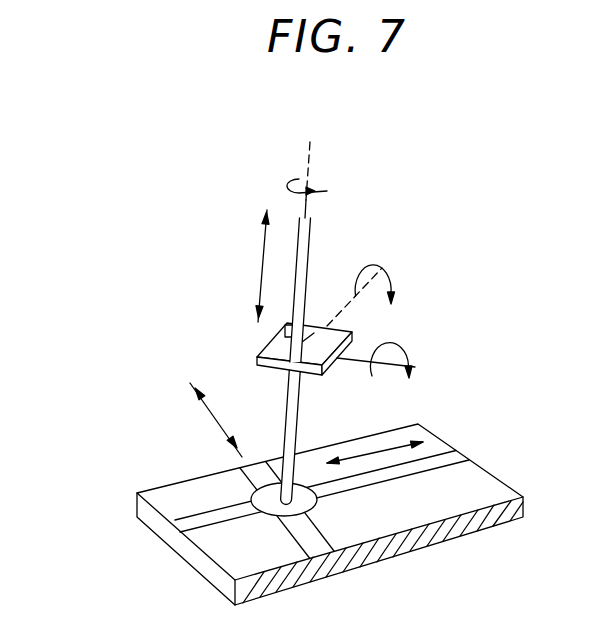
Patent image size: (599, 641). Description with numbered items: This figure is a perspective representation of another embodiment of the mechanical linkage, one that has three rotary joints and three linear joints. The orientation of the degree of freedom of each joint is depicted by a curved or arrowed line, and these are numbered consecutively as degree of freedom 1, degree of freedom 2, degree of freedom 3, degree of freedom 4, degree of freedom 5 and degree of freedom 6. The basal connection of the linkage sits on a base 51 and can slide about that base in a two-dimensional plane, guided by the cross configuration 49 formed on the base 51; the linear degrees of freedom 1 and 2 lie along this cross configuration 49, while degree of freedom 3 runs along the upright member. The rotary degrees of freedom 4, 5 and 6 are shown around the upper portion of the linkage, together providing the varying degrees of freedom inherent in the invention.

The degree of freedom 1 is at (216, 420).
The degree of freedom 2 is at (370, 455).
The degree of freedom 3 is at (253, 266).
The degree of freedom 4 is at (368, 286).
The degree of freedom 5 is at (390, 363).
The degree of freedom 6 is at (313, 180).
The cross configuration 49 is at (192, 530).
The base 51 is at (158, 493).